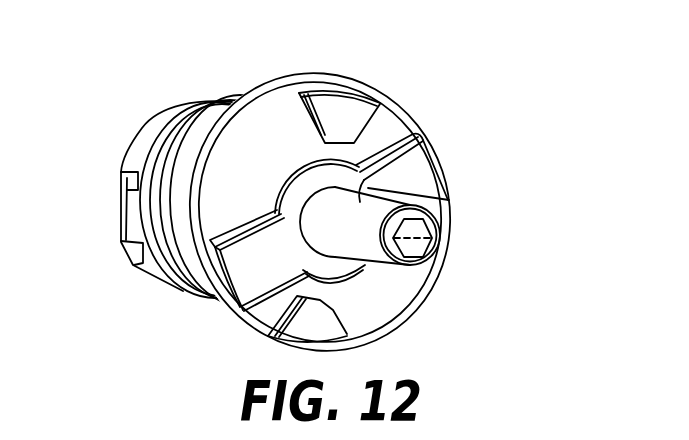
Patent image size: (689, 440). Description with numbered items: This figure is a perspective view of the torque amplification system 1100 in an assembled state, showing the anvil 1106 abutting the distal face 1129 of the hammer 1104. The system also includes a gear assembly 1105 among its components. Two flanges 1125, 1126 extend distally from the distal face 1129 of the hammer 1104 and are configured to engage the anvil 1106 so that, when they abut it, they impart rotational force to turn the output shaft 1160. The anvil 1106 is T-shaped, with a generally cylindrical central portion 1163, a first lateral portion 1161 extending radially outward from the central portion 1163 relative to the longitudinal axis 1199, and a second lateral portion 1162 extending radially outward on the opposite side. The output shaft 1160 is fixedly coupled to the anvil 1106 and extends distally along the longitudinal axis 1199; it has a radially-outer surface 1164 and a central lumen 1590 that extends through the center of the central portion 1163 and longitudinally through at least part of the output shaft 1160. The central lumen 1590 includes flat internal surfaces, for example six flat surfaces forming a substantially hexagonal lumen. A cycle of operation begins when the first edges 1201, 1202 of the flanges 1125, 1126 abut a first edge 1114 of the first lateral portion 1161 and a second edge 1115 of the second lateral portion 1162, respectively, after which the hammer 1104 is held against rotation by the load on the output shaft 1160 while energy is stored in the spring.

The torque amplification system 1100 is at (569, 99).
The hammer 1104 is at (289, 132).
The gear assembly 1105 is at (122, 156).
The anvil 1106 is at (259, 250).
The first edge 1114 is at (450, 203).
The second edge 1115 is at (212, 236).
The flange 1125 is at (356, 115).
The flange 1126 is at (345, 332).
The distal face 1129 is at (234, 162).
The output shaft 1160 is at (368, 244).
The first lateral portion 1161 is at (428, 153).
The second lateral portion 1162 is at (242, 275).
The central portion 1163 is at (325, 178).
The radially-outer surface 1164 is at (418, 180).
The longitudinal axis 1199 is at (448, 247).
The first edge 1201 is at (323, 143).
The first edge 1202 is at (348, 313).
The central lumen 1590 is at (421, 234).